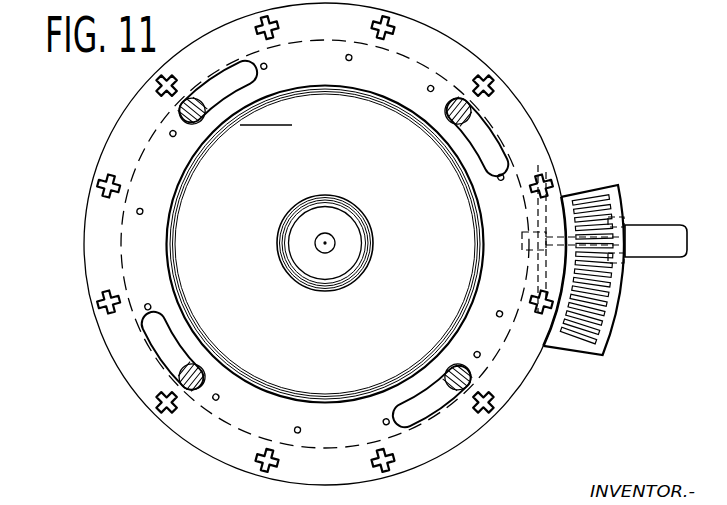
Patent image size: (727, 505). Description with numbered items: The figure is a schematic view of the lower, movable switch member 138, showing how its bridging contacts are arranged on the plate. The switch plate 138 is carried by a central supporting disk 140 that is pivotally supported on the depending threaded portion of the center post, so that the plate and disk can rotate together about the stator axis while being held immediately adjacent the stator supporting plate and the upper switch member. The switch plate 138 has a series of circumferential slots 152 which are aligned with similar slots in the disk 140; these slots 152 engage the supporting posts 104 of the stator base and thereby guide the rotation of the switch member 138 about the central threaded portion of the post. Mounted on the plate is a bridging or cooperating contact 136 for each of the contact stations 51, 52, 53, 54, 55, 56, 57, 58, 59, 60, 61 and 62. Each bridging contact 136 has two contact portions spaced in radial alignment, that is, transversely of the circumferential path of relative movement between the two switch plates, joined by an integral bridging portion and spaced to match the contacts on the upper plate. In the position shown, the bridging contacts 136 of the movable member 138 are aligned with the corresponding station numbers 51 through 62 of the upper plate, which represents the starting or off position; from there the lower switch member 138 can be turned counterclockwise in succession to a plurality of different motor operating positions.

The contact station 51 is at (157, 76).
The contact station 52 is at (120, 189).
The contact station 53 is at (120, 299).
The contact station 54 is at (208, 361).
The contact station 55 is at (262, 478).
The contact station 56 is at (388, 478).
The contact station 57 is at (442, 361).
The contact station 58 is at (482, 286).
The contact station 59 is at (482, 202).
The contact station 60 is at (493, 76).
The contact station 61 is at (388, 10).
The contact station 62 is at (262, 10).
The supporting post 104 is at (183, 376).
The bridging contact 136 is at (112, 300).
The lower switch member 138 is at (173, 433).
The disk 140 is at (165, 114).
The circumferential slot 152 is at (174, 334).